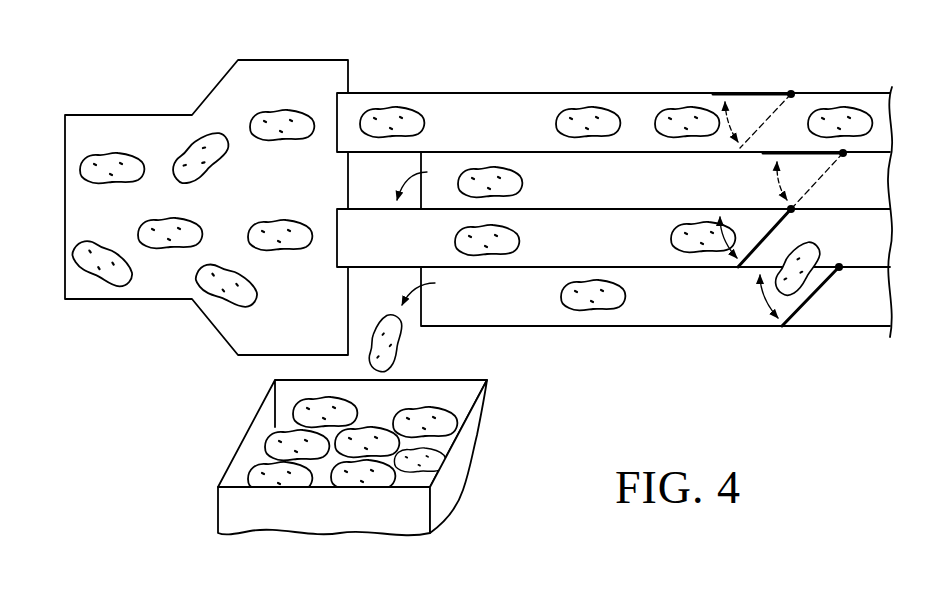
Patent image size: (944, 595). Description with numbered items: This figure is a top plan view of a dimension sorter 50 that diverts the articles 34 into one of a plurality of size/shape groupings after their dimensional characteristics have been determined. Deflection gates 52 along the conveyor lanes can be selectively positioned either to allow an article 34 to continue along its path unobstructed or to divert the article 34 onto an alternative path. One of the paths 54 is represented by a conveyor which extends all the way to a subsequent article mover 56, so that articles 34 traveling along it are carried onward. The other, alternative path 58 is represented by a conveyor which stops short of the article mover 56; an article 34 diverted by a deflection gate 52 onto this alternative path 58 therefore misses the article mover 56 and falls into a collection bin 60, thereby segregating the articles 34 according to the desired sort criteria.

The dimension sorter 50 is at (614, 197).
The deflection gate 52 is at (785, 152).
The path 54 is at (533, 223).
The article mover 56 is at (278, 61).
The alternative path 58 is at (645, 307).
The collection bin 60 is at (478, 428).
The article 34 is at (833, 102).